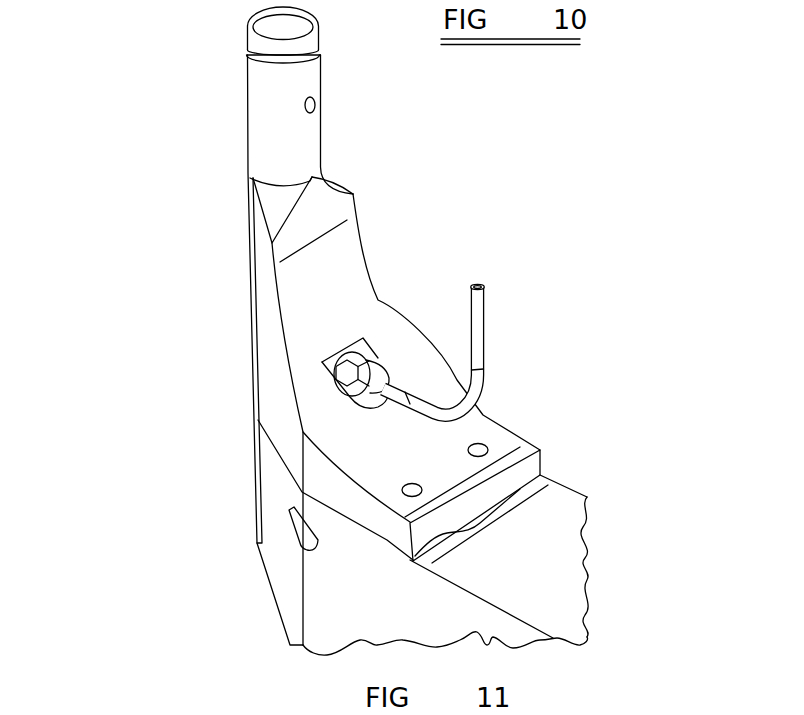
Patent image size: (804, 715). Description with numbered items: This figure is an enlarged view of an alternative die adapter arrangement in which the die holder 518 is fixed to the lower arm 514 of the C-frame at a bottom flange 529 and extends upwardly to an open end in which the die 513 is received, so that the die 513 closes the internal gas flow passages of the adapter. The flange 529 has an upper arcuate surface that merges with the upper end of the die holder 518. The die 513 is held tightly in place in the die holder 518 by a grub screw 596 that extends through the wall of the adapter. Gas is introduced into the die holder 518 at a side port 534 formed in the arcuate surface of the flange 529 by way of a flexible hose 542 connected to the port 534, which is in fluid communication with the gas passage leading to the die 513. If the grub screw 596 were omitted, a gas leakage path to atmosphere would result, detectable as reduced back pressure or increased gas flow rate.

The die 513 is at (253, 42).
The grub screw 596 is at (317, 106).
The die holder 518 is at (262, 296).
The side port 534 is at (372, 354).
The flexible hose 542 is at (474, 320).
The bottom flange 529 is at (483, 424).
The lower arm 514 is at (268, 521).